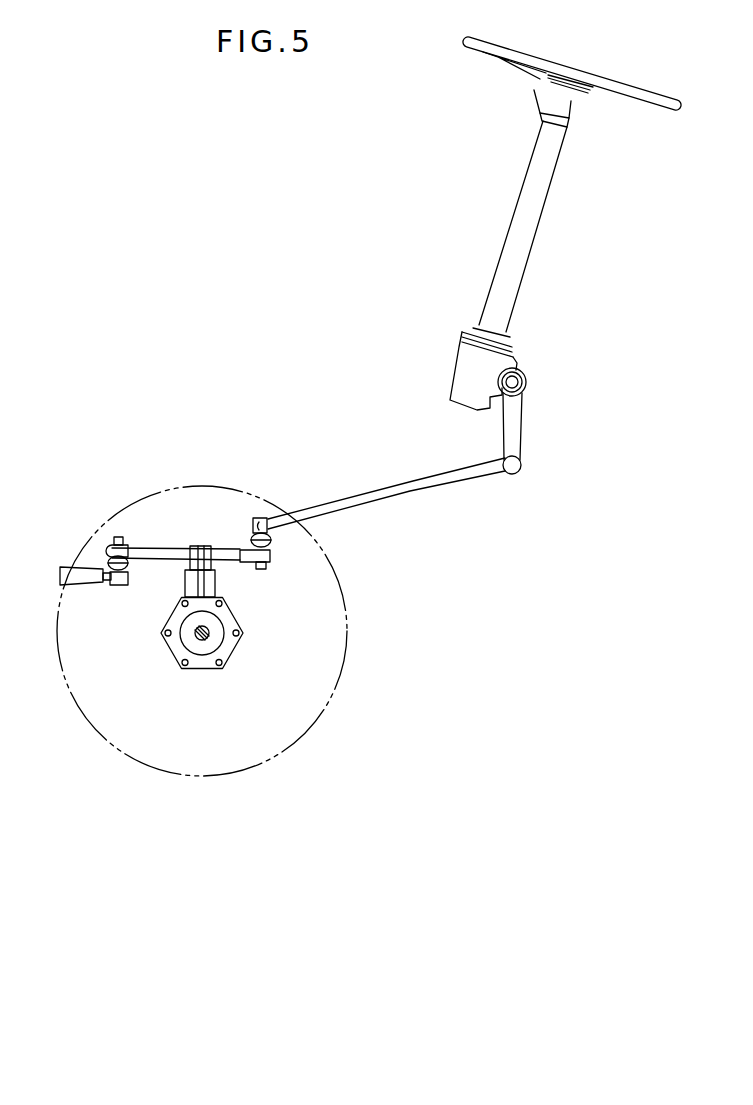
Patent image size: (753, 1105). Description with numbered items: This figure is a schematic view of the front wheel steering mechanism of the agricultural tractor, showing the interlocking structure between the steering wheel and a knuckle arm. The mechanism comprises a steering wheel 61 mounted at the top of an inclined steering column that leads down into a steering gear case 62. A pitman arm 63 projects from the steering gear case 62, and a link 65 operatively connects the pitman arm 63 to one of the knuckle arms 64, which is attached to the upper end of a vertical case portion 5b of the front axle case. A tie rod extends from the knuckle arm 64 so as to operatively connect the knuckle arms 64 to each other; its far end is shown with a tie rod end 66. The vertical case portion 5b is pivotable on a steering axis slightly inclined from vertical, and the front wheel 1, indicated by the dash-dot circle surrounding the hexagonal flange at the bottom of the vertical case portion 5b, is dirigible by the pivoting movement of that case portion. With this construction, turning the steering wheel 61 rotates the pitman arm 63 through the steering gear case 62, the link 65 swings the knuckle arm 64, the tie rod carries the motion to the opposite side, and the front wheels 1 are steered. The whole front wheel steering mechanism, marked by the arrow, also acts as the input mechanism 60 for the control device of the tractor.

The front wheel 1 is at (298, 740).
The vertical case portion 5b is at (213, 583).
The input mechanism 60 is at (521, 535).
The steering wheel 61 is at (555, 62).
The steering gear case 62 is at (460, 363).
The pitman arm 63 is at (513, 433).
The knuckle arm 64 is at (250, 510).
The link 65 is at (397, 497).
The tie rod end 66 is at (83, 568).